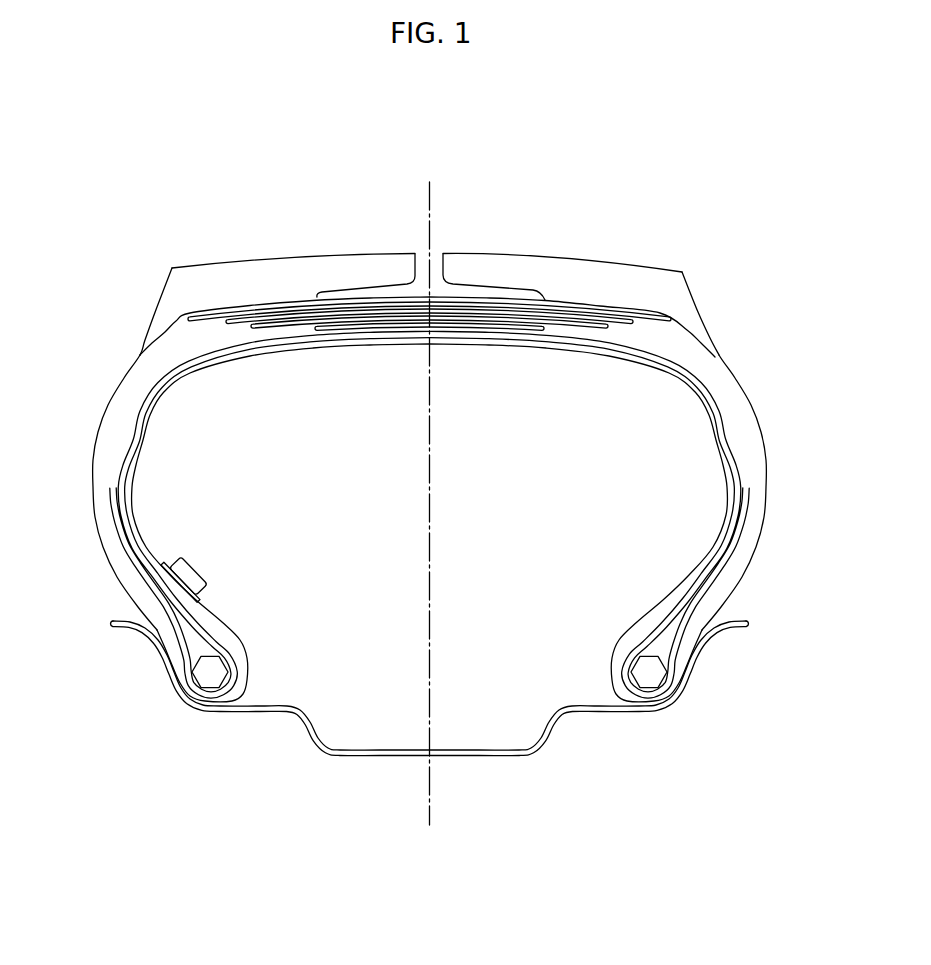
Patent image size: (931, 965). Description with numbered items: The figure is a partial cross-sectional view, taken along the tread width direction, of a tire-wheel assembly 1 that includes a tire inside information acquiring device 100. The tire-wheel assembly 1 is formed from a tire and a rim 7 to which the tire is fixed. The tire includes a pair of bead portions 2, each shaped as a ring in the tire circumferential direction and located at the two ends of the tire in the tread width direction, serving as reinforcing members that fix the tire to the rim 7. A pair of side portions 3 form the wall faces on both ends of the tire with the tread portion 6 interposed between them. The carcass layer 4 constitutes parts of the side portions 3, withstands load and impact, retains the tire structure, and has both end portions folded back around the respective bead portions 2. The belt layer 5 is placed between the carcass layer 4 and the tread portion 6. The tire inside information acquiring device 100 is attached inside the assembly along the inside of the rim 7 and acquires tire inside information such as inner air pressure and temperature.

The tire-wheel assembly 1 is at (568, 158).
The bead portions 2 is at (260, 651).
The side portions 3 is at (107, 467).
The carcass layer 4 is at (712, 427).
The belt layer 5 is at (268, 300).
The tread portion 6 is at (492, 253).
The rim 7 is at (488, 757).
The tire inside information acquiring device 100 is at (213, 568).